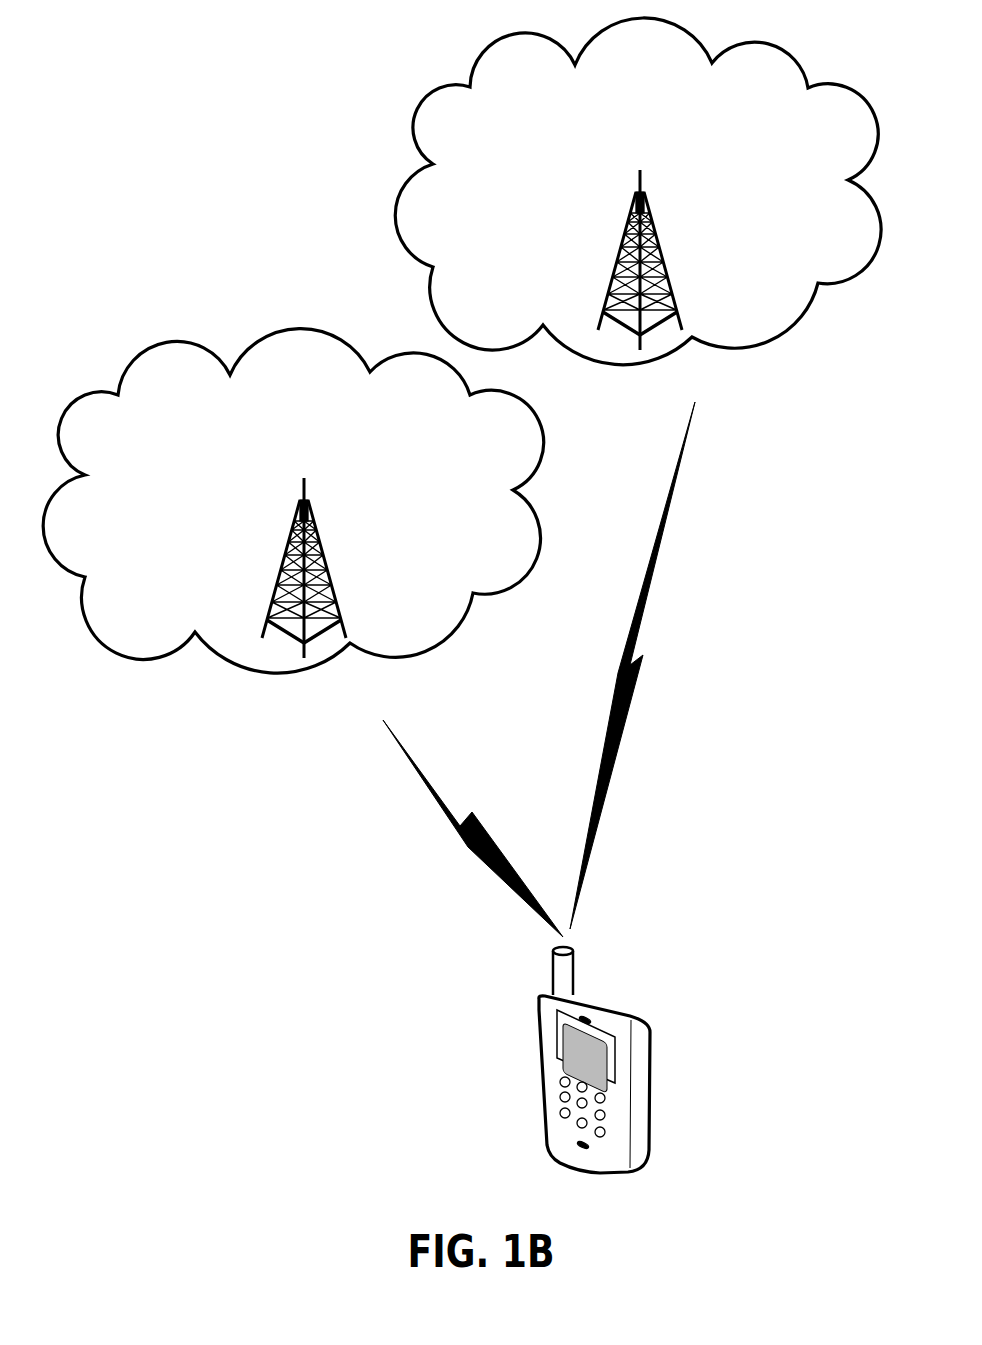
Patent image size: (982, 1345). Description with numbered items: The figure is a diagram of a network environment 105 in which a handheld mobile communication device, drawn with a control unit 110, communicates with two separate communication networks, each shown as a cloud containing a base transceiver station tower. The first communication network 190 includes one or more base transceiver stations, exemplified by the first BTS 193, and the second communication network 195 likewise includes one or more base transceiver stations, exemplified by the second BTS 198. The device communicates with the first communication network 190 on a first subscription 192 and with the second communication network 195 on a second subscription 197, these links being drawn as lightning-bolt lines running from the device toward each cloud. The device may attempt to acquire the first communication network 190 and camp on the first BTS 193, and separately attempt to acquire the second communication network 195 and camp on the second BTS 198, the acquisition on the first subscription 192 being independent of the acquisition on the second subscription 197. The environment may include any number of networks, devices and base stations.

The network environment 105 is at (141, 92).
The control unit 110 is at (655, 1070).
The first communication network 190 is at (285, 459).
The first subscription 192 is at (496, 850).
The first BTS 193 is at (275, 592).
The second communication network 195 is at (626, 151).
The second subscription 197 is at (633, 712).
The second BTS 198 is at (658, 255).